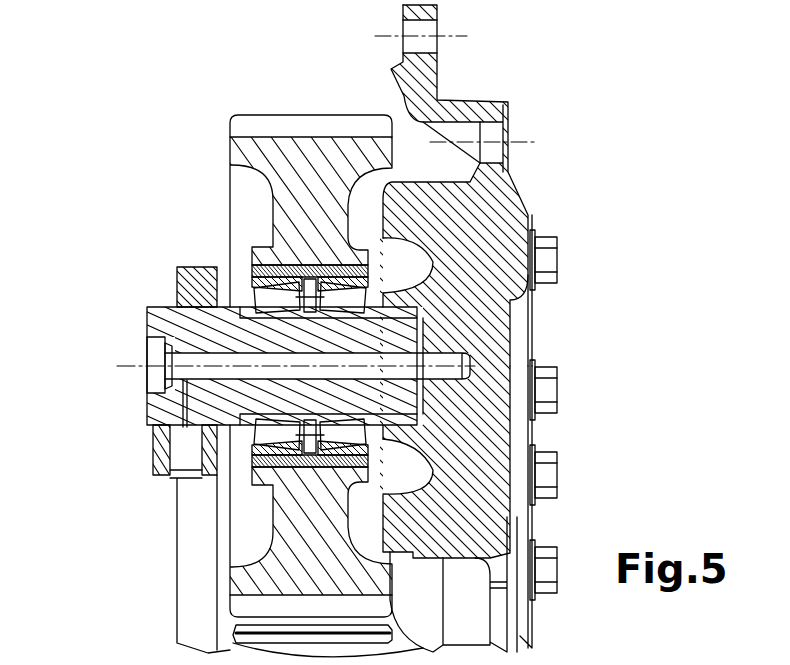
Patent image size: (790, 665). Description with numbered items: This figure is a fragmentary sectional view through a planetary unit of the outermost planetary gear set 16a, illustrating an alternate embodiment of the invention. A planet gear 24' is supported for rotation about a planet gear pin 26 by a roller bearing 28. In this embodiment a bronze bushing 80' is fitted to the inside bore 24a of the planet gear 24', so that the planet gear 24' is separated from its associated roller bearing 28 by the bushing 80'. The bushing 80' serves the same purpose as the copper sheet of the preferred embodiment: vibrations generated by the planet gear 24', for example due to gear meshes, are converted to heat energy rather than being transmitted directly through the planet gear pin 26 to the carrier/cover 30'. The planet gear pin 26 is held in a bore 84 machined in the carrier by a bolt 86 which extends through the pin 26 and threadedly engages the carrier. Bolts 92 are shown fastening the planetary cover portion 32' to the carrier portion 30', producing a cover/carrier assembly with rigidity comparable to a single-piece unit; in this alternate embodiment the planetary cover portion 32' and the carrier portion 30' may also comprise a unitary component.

The outermost planetary gear set 16a is at (262, 58).
The planet gear 24' is at (307, 211).
The inside bore 24a is at (282, 500).
The roller bearings 28 is at (243, 305).
The planet gear pin 26 is at (155, 324).
The bolt 86 is at (150, 383).
The bronze bushing 80' is at (161, 538).
The planetary cover portion 32' is at (395, 281).
The carrier portion 30' is at (395, 326).
The bolts 92 is at (545, 263).
The bore 84 is at (430, 393).